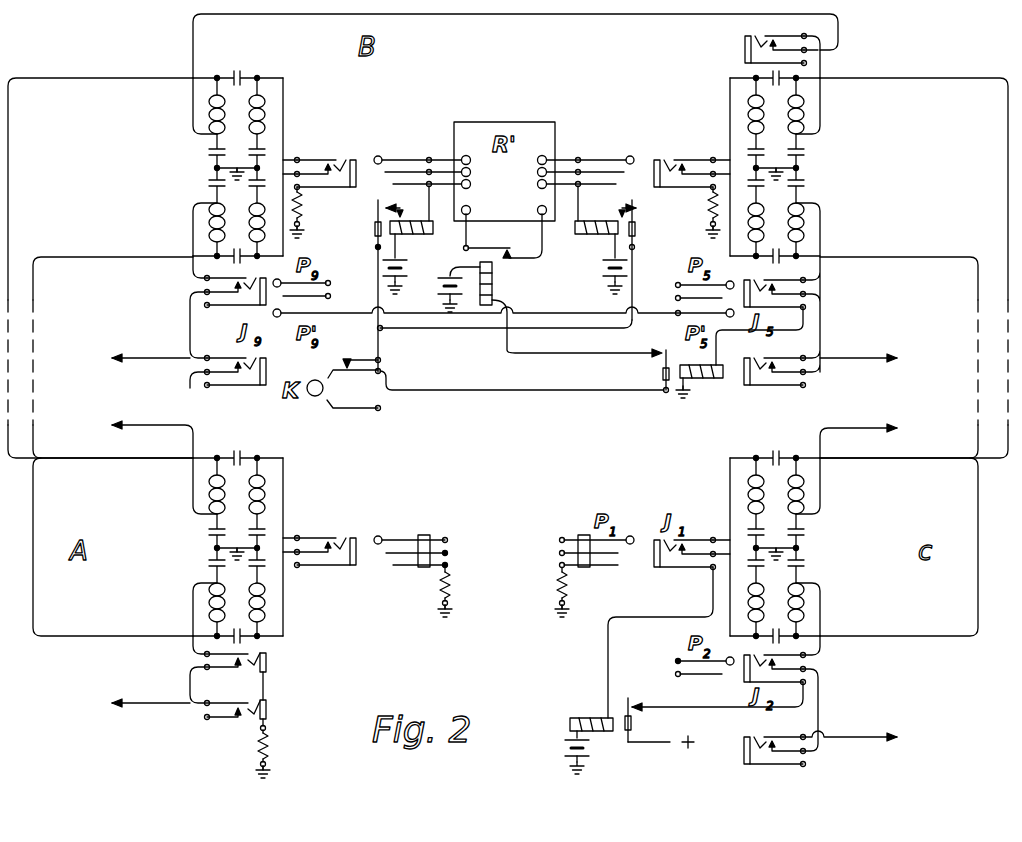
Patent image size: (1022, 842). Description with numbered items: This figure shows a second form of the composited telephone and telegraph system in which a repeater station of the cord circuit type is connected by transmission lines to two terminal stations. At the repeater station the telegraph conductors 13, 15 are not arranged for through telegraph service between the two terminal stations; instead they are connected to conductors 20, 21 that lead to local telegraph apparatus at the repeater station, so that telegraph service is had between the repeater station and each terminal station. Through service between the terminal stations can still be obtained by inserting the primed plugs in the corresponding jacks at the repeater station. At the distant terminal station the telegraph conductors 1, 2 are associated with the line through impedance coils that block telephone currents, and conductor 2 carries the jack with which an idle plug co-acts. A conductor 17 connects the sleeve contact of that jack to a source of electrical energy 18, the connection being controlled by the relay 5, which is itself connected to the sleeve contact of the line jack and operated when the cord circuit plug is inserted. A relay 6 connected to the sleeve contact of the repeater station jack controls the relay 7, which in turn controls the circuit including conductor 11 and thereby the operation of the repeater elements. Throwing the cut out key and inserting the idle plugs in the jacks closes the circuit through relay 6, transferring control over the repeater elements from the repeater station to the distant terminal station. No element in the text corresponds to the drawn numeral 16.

The telegraph conductor 1 is at (876, 416).
The telegraph conductor 2 is at (821, 632).
The relay 5 is at (590, 703).
The relay 6 is at (703, 385).
The relay 7 is at (492, 296).
The conductor 11 is at (556, 300).
The telegraph conductor 13 is at (820, 246).
The telegraph conductor 15 is at (190, 236).
The line conductor 16 is at (855, 724).
The conductor 17 is at (702, 694).
The source of electrical energy 18 is at (663, 757).
The conductor 20 is at (152, 348).
The conductor 21 is at (886, 346).